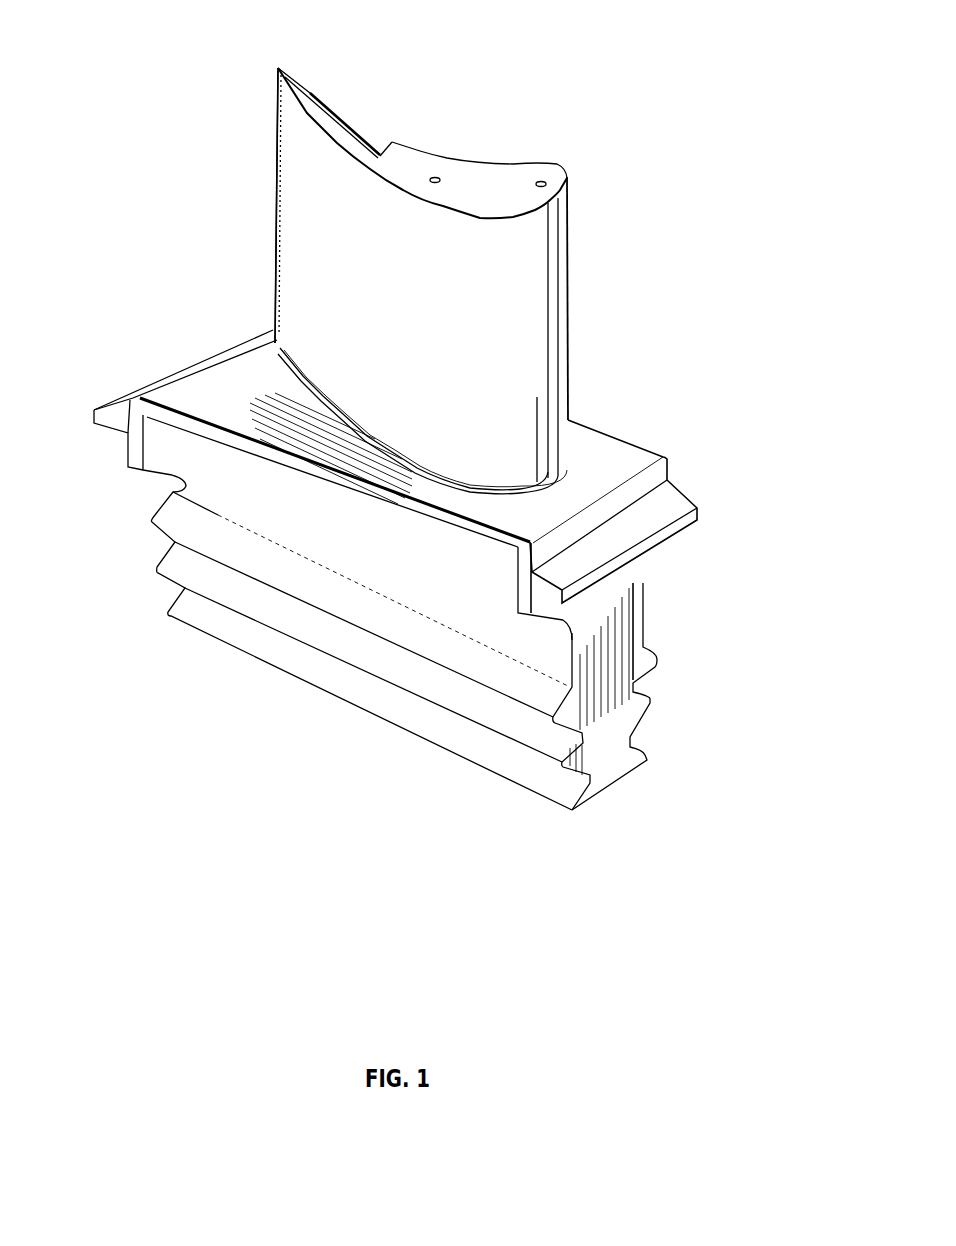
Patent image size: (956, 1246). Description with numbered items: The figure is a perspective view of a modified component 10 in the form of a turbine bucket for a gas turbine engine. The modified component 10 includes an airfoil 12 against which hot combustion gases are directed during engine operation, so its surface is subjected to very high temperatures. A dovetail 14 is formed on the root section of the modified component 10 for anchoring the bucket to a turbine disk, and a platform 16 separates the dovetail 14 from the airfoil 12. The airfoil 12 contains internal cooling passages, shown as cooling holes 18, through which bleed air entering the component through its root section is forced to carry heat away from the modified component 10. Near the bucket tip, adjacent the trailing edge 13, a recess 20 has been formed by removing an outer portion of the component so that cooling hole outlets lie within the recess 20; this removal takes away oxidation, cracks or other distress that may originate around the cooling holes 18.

The modified component 10 is at (242, 140).
The airfoil 12 is at (292, 263).
The trailing edge 13 is at (264, 134).
The dovetail 14 is at (658, 668).
The platform 16 is at (610, 457).
The cooling holes 18 is at (542, 180).
The recess 20 is at (331, 96).